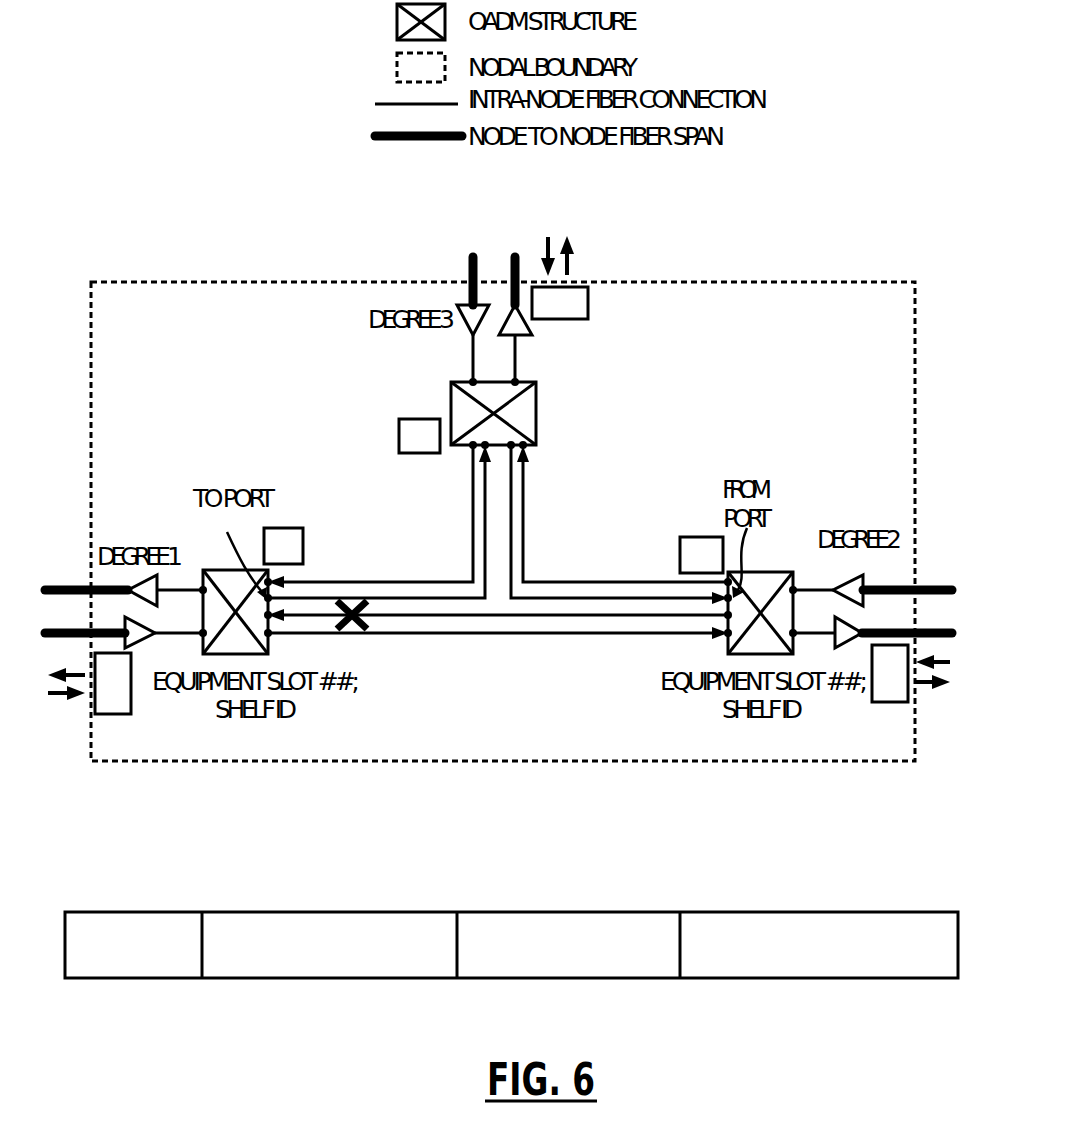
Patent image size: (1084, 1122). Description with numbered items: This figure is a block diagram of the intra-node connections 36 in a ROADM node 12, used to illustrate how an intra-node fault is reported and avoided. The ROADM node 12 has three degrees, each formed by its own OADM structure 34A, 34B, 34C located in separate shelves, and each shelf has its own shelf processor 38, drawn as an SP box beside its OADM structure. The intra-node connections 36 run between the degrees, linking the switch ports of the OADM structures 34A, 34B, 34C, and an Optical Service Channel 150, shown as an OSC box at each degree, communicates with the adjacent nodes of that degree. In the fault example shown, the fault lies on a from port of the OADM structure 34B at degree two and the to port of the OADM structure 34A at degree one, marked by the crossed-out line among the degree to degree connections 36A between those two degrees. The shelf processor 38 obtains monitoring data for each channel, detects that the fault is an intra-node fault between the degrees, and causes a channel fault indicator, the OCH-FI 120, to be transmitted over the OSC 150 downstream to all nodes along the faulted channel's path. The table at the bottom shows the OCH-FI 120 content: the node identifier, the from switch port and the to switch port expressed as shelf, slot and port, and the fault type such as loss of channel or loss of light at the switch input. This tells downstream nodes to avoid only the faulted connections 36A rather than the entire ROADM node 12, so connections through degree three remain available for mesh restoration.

The ROADM node 12 is at (855, 190).
The OADM structure 34A is at (205, 568).
The OADM structure 34B is at (762, 570).
The OADM structure 34C is at (537, 413).
The intra-node connections 36 is at (582, 535).
The degree to degree connections 36A is at (508, 621).
The shelf processor 38 is at (493, 496).
The OCH-FI 120 is at (900, 877).
The Optical Service Channel 150 is at (499, 527).